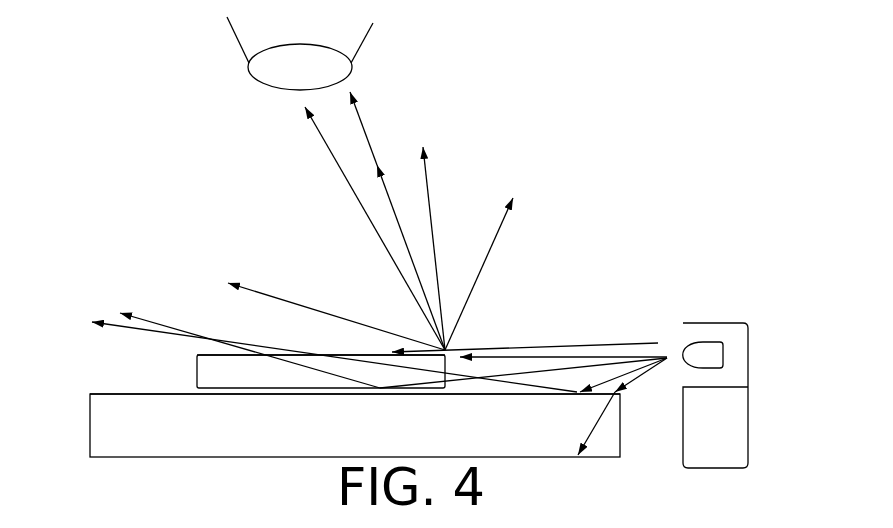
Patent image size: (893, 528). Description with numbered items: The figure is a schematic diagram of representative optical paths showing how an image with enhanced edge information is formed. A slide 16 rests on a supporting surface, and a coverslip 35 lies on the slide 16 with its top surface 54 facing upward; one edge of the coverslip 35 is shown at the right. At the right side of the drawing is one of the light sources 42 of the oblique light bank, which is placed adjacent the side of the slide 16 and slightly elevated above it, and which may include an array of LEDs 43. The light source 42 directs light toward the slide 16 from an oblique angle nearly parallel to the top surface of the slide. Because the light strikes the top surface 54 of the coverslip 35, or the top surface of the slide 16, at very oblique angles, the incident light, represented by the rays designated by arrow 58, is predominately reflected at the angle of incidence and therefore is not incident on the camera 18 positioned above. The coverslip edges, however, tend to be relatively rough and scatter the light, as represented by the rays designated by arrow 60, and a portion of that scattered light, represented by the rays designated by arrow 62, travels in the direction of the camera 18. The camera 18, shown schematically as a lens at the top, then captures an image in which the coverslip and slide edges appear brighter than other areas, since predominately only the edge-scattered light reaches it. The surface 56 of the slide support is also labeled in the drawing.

The camera 18 is at (357, 40).
The rays scattered toward the camera 62 is at (363, 147).
The scattered rays 60 is at (453, 230).
The incident rays 58 is at (258, 285).
The top surface of the coverslip 54 is at (213, 352).
The coverslip 35 is at (220, 373).
The slide 16 is at (350, 440).
The top surface of support base 56 is at (530, 395).
The LEDs 43 is at (708, 353).
The light sources 42 is at (732, 403).